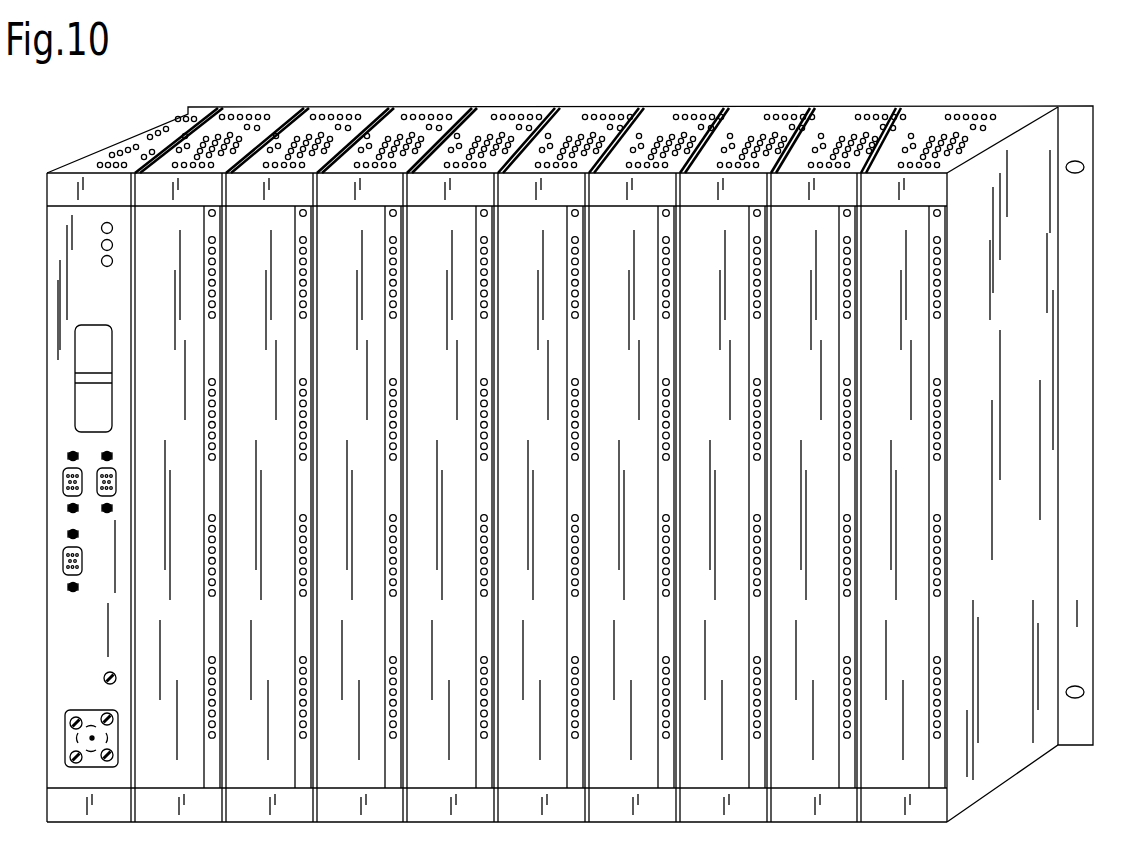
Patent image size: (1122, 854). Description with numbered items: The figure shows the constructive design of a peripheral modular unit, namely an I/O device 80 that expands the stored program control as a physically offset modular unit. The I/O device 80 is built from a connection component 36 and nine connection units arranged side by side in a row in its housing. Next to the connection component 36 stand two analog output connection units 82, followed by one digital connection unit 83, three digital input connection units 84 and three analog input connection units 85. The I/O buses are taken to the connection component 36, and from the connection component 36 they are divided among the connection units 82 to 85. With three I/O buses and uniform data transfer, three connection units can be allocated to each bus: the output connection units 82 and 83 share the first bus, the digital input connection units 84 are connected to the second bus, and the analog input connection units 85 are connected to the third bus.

The I/O device 80 is at (1027, 147).
The connection component 36 is at (90, 185).
The analog output connection unit 82 is at (176, 185).
The digital connection unit 83 is at (357, 190).
The digital input connection unit 84 is at (448, 190).
The analog input connection unit 85 is at (722, 190).